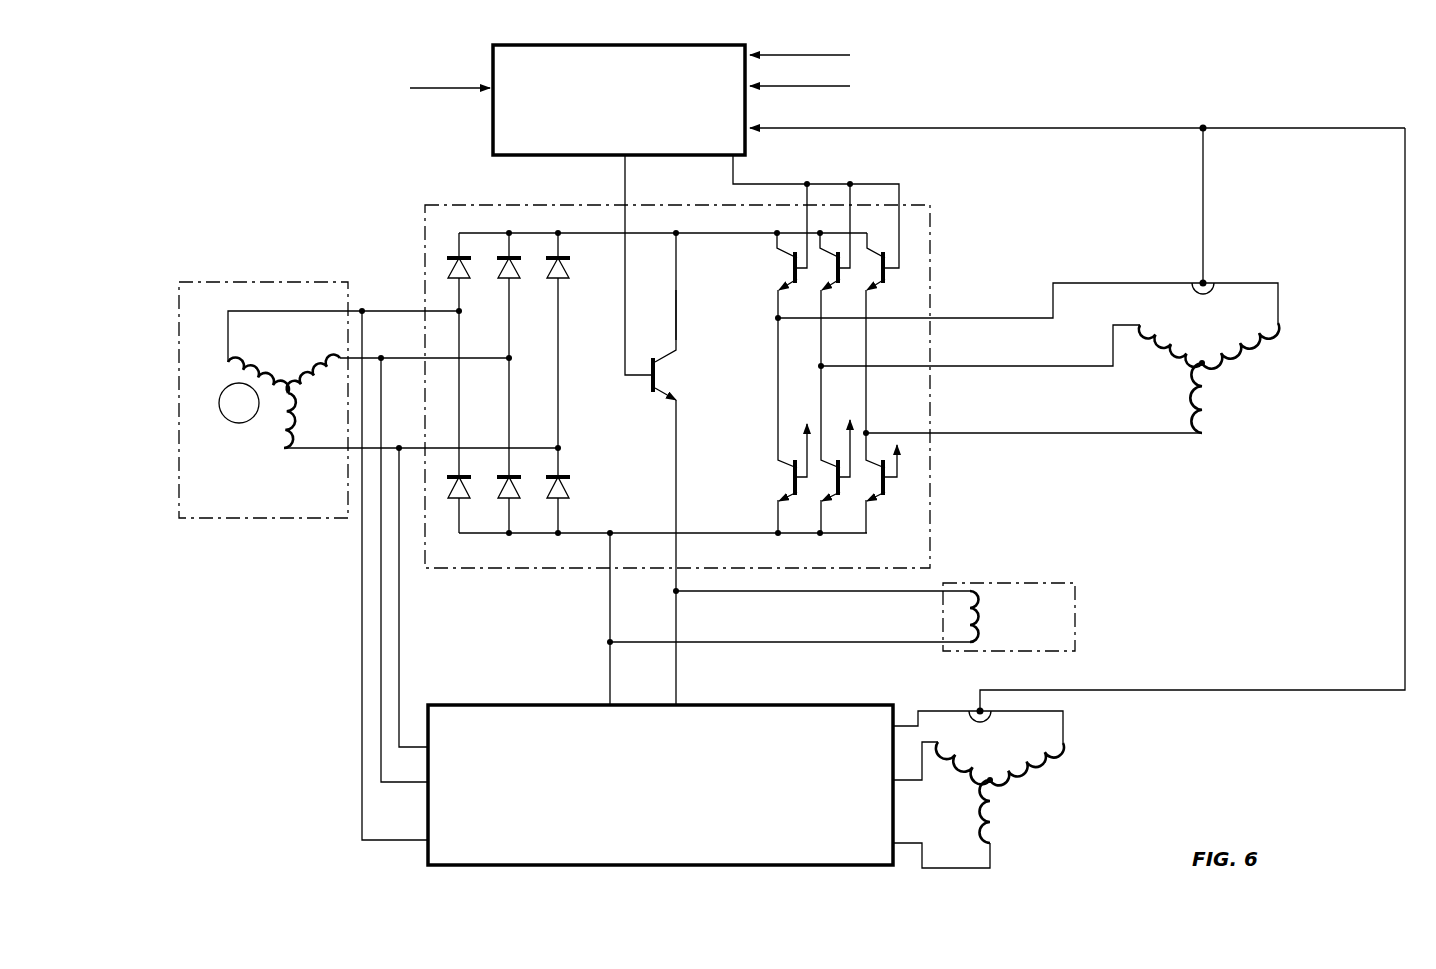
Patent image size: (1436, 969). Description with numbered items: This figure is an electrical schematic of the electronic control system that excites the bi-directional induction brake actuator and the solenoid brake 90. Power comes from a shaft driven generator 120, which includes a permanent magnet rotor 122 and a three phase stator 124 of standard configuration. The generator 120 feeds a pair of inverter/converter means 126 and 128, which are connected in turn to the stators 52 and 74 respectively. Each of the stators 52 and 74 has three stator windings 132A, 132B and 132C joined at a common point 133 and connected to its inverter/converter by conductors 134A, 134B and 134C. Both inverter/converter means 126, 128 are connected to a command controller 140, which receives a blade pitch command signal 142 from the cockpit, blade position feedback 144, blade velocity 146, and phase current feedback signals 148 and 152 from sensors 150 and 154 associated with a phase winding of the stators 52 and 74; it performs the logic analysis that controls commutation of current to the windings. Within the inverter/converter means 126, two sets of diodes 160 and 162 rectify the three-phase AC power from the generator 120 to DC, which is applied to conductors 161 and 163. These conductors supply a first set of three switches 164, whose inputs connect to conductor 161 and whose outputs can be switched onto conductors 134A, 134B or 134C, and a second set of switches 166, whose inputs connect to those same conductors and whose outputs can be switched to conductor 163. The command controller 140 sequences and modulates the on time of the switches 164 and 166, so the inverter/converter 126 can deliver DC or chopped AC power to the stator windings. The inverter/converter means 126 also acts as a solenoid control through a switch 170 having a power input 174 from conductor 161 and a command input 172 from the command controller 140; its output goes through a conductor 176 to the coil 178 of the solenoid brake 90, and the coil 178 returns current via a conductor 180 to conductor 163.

The stator 52 is at (1308, 314).
The stator 74 is at (1080, 732).
The solenoid brake 90 is at (1062, 583).
The shaft driven generator 120 is at (240, 258).
The permanent magnet rotor 122 is at (240, 424).
The three phase stator 124 is at (293, 352).
The inverter/converter means 126 is at (488, 204).
The inverter/converter means 128 is at (675, 801).
The stator winding 132A is at (1262, 343).
The stator winding 132B is at (1206, 400).
The stator winding 132C is at (1168, 344).
The common point 133 is at (1208, 368).
The conductor 134A is at (966, 318).
The conductor 134B is at (964, 432).
The conductor 134C is at (966, 366).
The command controller 140 is at (642, 108).
The blade pitch command signal 142 is at (436, 87).
The blade position feedback 144 is at (818, 52).
The blade velocity 146 is at (815, 85).
The phase current feedback signal 148 is at (1205, 214).
The sensor 150 is at (1196, 280).
The phase current feedback signal 152 is at (1403, 148).
The sensor 154 is at (978, 706).
The diodes 160 is at (582, 273).
The conductor 161 is at (602, 232).
The diodes 162 is at (586, 485).
The conductor 163 is at (580, 538).
The switches 164 is at (773, 278).
The switches 166 is at (772, 484).
The switch 170 is at (668, 387).
The command input 172 is at (627, 178).
The power input 174 is at (678, 312).
The conductor 176 is at (872, 597).
The coil 178 is at (982, 614).
The conductor 180 is at (730, 649).